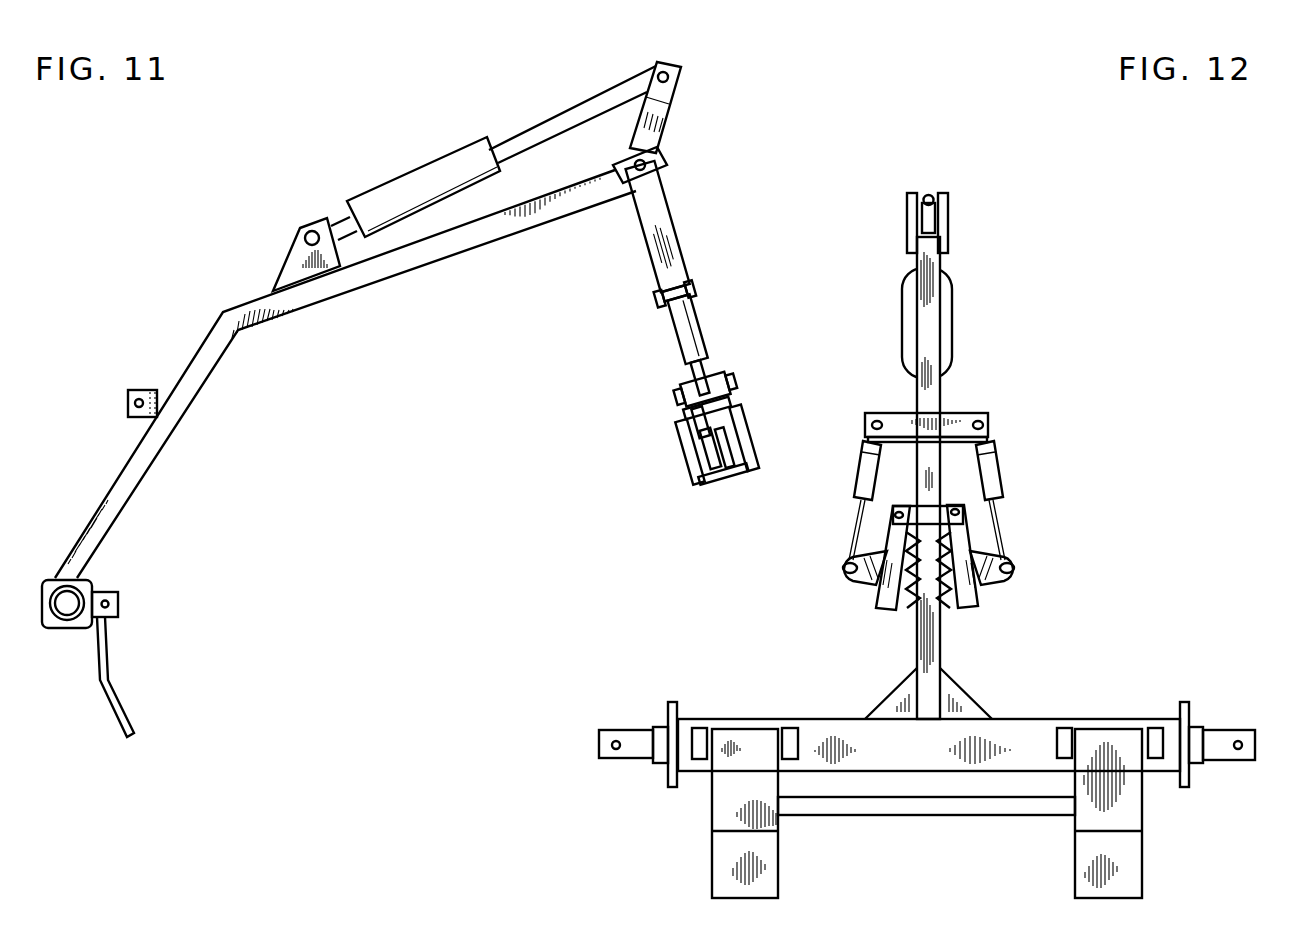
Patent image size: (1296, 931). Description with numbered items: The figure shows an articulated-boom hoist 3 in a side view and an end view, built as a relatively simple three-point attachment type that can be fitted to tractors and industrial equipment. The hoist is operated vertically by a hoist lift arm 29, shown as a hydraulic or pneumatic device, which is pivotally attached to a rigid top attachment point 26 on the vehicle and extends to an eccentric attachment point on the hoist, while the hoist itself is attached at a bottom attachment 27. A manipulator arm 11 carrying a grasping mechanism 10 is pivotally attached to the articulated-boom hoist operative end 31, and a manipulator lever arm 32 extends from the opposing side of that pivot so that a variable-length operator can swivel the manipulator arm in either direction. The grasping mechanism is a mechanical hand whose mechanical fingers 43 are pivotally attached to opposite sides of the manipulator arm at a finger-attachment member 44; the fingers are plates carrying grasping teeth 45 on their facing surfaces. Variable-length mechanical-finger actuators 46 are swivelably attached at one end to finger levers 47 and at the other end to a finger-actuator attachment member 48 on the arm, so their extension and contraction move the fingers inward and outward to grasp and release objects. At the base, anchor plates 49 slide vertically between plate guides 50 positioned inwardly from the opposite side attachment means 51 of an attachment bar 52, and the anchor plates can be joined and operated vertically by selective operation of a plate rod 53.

In FIG. 11, the articulated-boom hoist 3 is at (152, 205).
In FIG. 12, the articulated-boom hoist 3 is at (932, 138).
In FIG. 11, the grasping mechanism 10 is at (632, 452).
In FIG. 12, the grasping mechanism 10 is at (1090, 561).
In FIG. 11, the manipulator arm 11 is at (658, 250).
In FIG. 12, the manipulator arm 11 is at (927, 308).
In FIG. 11, the top attachment point 26 is at (141, 392).
In FIG. 12, the bottom attachment 27 is at (615, 730).
In FIG. 11, the hoist lift arm 29 is at (414, 173).
In FIG. 12, the hoist lift arm 29 is at (941, 343).
In FIG. 11, the articulated-boom hoist operative end 31 is at (668, 163).
In FIG. 11, the manipulator lever arm 32 is at (681, 68).
In FIG. 11, the mechanical fingers 43 is at (692, 476).
In FIG. 12, the mechanical fingers 43 is at (880, 568).
In FIG. 12, the finger-attachment member 44 is at (962, 512).
In FIG. 12, the grasping teeth 45 is at (937, 560).
In FIG. 11, the variable-length mechanical-finger actuators 46 is at (682, 347).
In FIG. 12, the variable-length mechanical-finger actuators 46 is at (880, 447).
In FIG. 11, the finger levers 47 is at (710, 468).
In FIG. 12, the finger levers 47 is at (857, 543).
In FIG. 12, the finger-actuator attachment member 48 is at (990, 421).
In FIG. 11, the anchor plates 49 is at (102, 663).
In FIG. 12, the anchor plates 49 is at (722, 858).
In FIG. 12, the plate guides 50 is at (785, 748).
In FIG. 12, the side attachment means 51 is at (647, 675).
In FIG. 12, the attachment bar 52 is at (933, 745).
In FIG. 12, the plate rod 53 is at (853, 808).